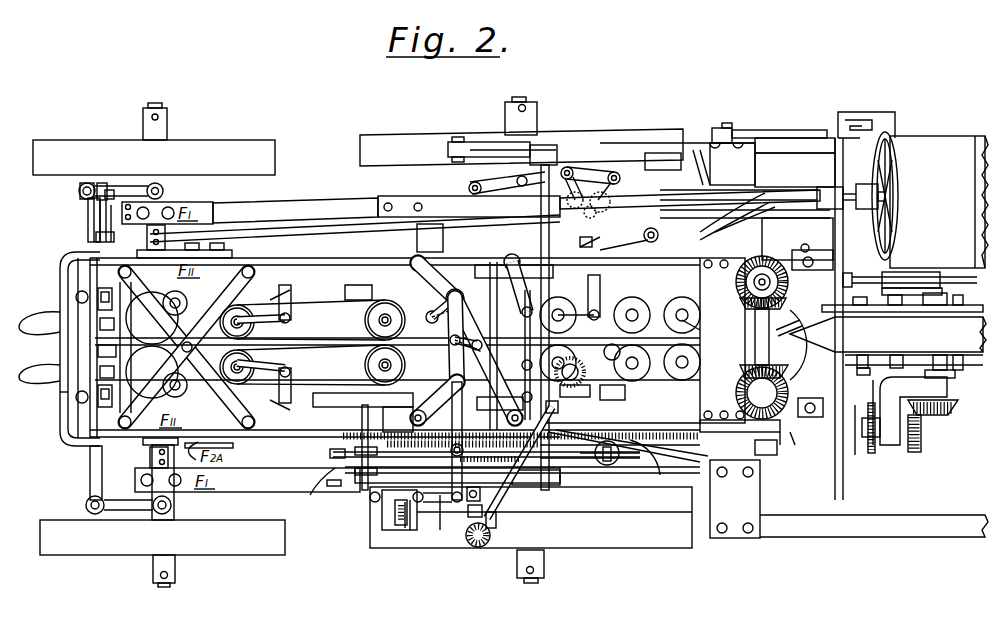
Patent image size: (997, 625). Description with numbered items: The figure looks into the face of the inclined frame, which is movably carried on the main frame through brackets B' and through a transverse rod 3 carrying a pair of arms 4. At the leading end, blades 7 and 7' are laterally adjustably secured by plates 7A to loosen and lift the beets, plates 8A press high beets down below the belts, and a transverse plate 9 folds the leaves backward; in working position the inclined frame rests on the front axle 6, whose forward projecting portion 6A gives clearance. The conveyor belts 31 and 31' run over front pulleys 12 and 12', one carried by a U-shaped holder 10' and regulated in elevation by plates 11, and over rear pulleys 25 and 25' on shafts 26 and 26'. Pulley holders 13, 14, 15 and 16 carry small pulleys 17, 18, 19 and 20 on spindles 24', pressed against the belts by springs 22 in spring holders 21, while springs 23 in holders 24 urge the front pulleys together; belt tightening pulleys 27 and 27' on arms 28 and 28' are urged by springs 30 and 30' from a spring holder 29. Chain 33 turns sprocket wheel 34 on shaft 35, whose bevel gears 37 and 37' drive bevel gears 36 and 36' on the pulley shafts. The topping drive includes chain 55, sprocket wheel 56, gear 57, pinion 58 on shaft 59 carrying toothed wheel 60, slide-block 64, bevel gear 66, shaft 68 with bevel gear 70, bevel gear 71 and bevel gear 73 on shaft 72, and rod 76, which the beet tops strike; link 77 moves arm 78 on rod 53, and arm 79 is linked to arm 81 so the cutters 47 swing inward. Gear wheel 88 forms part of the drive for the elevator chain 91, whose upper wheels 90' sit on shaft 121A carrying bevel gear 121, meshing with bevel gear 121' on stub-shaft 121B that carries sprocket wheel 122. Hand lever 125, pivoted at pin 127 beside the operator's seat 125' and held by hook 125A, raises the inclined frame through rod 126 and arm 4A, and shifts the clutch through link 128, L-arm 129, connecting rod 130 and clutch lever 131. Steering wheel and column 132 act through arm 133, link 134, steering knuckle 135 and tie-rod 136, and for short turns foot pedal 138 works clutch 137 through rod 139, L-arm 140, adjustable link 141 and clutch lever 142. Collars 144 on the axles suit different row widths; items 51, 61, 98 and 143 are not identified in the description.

The steering knuckle 135 is at (125, 190).
The link 134 is at (82, 203).
The arm 133 is at (104, 221).
The tie-rod 136 is at (90, 234).
The steering wheel and column 132 is at (215, 232).
The collars 144 is at (527, 110).
The rod 126 is at (466, 142).
The arm 4A is at (492, 150).
The rod 3 is at (573, 476).
The clutch 137 is at (470, 173).
The clutch lever 142 is at (468, 189).
The link 141 is at (578, 185).
The rod 139 is at (638, 178).
The L-arm 140 is at (592, 195).
The foot pedal 138 is at (663, 161).
The L-arm 129 is at (705, 183).
The pin 127 is at (712, 122).
The link 128 is at (734, 124).
The hand lever 125 is at (779, 179).
The hook 125A is at (864, 112).
The operator's seat 125' is at (939, 202).
The rear pulley 25 is at (844, 319).
The rear pulley 25' is at (797, 239).
The connecting rod 130 is at (740, 220).
The spring 30' is at (762, 202).
The spring holder 29 is at (812, 265).
The pin 98 is at (810, 250).
The brackets B' is at (442, 238).
The belt tightening pulley 27' is at (619, 236).
The front axle 6 is at (115, 383).
The U-shaped pulley holder 10' is at (186, 345).
The transversely disposed plate 9 is at (131, 347).
The plates 7A is at (108, 290).
The blade 7' is at (39, 312).
The blade 7 is at (39, 363).
The forward projecting portion 6A is at (62, 390).
The plates 8A is at (116, 318).
The front pulley 12' is at (168, 317).
The front pulley 12 is at (166, 372).
The small pulley 17 is at (248, 328).
The spindles 24' is at (253, 365).
The pulley holder 13 is at (261, 305).
The holders 24 is at (299, 347).
The springs 23 is at (262, 290).
The springs 22 is at (330, 300).
The conveyor belt 31' is at (397, 330).
The conveyor belt 31 is at (397, 365).
The small pulley 18 is at (370, 322).
The spring holders 21 is at (355, 285).
The pivot 51 is at (408, 265).
The pulley holder 14 is at (428, 294).
The arm 81 is at (434, 322).
The arms 4 is at (478, 365).
The rod 53 is at (456, 392).
The arm 79 is at (442, 384).
The gear wheel 88 is at (450, 342).
The arm 78 is at (462, 405).
The cutters 47 is at (598, 290).
The pulley holder 15 is at (640, 295).
The small pulley 19 is at (655, 298).
The arm 28' is at (682, 317).
The small pulley 20 is at (695, 322).
The bevel gear 73 is at (560, 400).
The rod 76 is at (582, 388).
The clutch lever 131 is at (640, 398).
The bar 61 is at (330, 408).
The shaft 59 is at (362, 412).
The chain 55 is at (400, 430).
The sprocket wheel 56 is at (345, 438).
The pinion 58 is at (345, 456).
The gear 57 is at (313, 492).
The toothed wheel 60 is at (326, 488).
The slide-block 64 is at (385, 512).
The small bevel gear 66 is at (410, 525).
The shaft 68 is at (420, 522).
The link 77 is at (440, 522).
The bevel gear 70 is at (470, 522).
The bevel gear 71 is at (492, 537).
The shaft 72 is at (500, 505).
The plates 11 is at (158, 460).
The bevel gear 36' is at (745, 282).
The pulley holder 16 is at (740, 296).
The bevel gear 37' is at (763, 317).
The bevel gear 37 is at (764, 343).
The bevel gear 36 is at (746, 389).
The shaft 26 is at (753, 371).
The shaft 26' is at (800, 333).
The rail 143 is at (905, 345).
The chain driving wheels 90' is at (906, 292).
The beet elevator chain 91 is at (948, 376).
The shaft 121A is at (910, 411).
The bevel gear 121 is at (947, 420).
The bevel gear 121' is at (934, 442).
The sprocket wheel 122 is at (873, 455).
The stub-shaft 121B is at (855, 455).
The arm 28 is at (735, 499).
The belt tightening pulley 27 is at (624, 460).
The spring 30 is at (624, 455).
The shaft 35 is at (765, 456).
The chain 33 is at (783, 445).
The sprocket wheel 34 is at (798, 445).